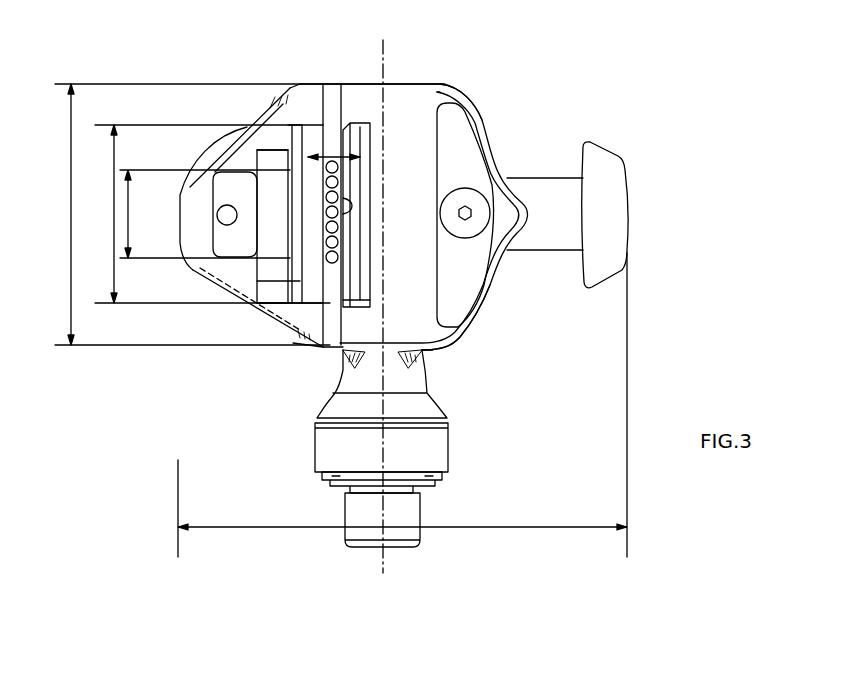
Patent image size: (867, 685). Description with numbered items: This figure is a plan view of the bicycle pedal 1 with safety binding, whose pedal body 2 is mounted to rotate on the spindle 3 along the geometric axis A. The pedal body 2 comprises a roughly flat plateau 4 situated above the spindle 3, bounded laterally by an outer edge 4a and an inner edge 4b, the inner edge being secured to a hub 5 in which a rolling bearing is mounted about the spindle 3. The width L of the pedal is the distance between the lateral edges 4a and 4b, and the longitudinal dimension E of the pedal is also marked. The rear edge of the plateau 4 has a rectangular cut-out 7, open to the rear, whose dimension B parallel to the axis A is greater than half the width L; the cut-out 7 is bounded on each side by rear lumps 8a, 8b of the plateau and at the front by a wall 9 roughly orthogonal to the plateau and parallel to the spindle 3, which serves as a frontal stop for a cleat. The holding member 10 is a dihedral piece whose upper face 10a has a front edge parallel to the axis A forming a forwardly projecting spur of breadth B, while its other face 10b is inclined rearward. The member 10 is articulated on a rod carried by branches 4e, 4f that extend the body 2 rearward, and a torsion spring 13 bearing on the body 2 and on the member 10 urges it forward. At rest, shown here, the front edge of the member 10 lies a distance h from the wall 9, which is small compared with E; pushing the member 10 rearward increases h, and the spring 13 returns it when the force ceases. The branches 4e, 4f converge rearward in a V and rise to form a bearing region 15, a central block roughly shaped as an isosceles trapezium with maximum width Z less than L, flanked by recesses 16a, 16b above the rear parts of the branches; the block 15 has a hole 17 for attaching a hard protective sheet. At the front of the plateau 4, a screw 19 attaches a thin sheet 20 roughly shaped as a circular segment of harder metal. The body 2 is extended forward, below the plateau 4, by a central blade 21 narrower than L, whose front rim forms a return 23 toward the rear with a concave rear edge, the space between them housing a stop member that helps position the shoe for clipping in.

The bicycle pedal 1 is at (516, 50).
The pedal body 2 is at (458, 86).
The spindle 3 is at (357, 513).
The plateau 4 is at (406, 104).
The outer edge 4a is at (423, 83).
The inner edge 4b is at (440, 357).
The branch 4e is at (300, 337).
The branch 4f is at (307, 87).
The hub 5 is at (423, 440).
The rectangular cut-out 7 is at (333, 95).
The rear lump 8a is at (345, 122).
The rear lump 8b is at (346, 340).
The wall 9 is at (348, 203).
The holding member 10 is at (250, 307).
The upper face 10a is at (315, 290).
The other face 10b is at (262, 170).
The torsion spring 13 is at (333, 240).
The bearing region 15 is at (205, 188).
The recess 16a is at (257, 127).
The recess 16b is at (288, 247).
The hole 17 is at (222, 215).
The screw 19 is at (478, 197).
The thin sheet 20 is at (463, 140).
The central blade 21 is at (543, 233).
The return 23 is at (615, 205).
The width of the pedal L is at (72, 212).
The dimension of the cut-out B is at (113, 233).
The maximum width of the bearing region Z is at (130, 223).
The distance h is at (362, 158).
The geometric axis A is at (390, 513).
The longitudinal dimension of the pedal E is at (497, 527).